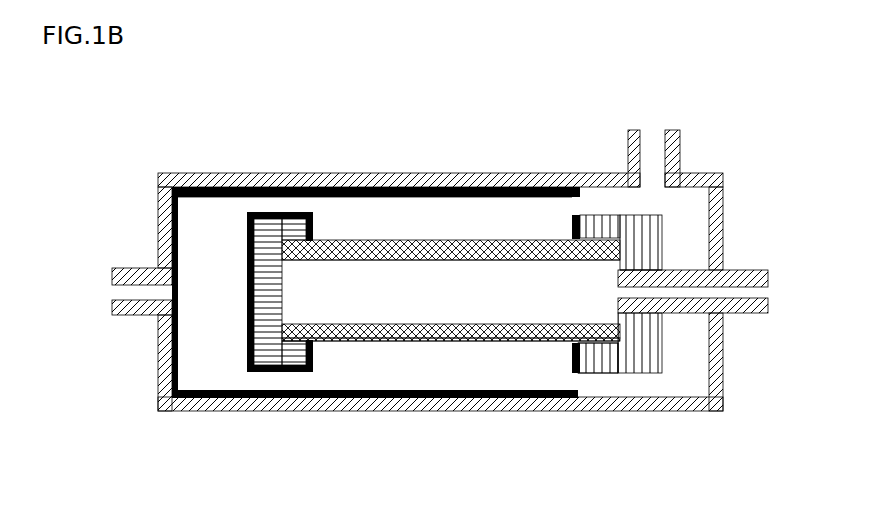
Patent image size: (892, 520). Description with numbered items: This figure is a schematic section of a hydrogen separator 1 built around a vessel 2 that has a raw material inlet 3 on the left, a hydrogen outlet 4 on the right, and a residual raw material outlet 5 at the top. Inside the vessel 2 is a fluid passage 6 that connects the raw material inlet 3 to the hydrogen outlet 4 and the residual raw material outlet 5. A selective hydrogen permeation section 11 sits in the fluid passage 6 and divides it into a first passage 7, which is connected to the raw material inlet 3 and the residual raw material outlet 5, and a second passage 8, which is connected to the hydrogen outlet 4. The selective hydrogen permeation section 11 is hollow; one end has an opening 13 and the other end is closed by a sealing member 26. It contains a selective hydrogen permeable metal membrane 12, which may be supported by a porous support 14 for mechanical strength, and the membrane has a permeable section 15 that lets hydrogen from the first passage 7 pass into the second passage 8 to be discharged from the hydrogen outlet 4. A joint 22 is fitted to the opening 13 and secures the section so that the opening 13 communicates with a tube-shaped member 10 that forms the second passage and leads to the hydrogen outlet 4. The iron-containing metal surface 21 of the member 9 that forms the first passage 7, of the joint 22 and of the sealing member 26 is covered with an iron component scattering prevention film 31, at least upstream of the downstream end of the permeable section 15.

The hydrogen separator 1 is at (728, 99).
The vessel 2 is at (437, 270).
The raw material inlet 3 is at (118, 292).
The hydrogen outlet 4 is at (757, 290).
The residual raw material outlet 5 is at (650, 133).
The fluid passage 6 is at (492, 185).
The first passage 7 is at (389, 223).
The second passage 8 is at (683, 293).
The member that forms the first passage 9 is at (219, 174).
The member that forms the second passage 10 is at (687, 306).
The selective hydrogen permeation section 11 is at (335, 345).
The selective hydrogen permeable metal membrane 12 is at (598, 374).
The opening 13 is at (633, 270).
The porous support 14 is at (463, 341).
The permeable section 15 is at (380, 341).
The iron-containing metal surface 21 is at (260, 187).
The joint 22 is at (616, 236).
The sealing member 26 is at (260, 370).
The iron component scattering prevention film 31 is at (311, 190).